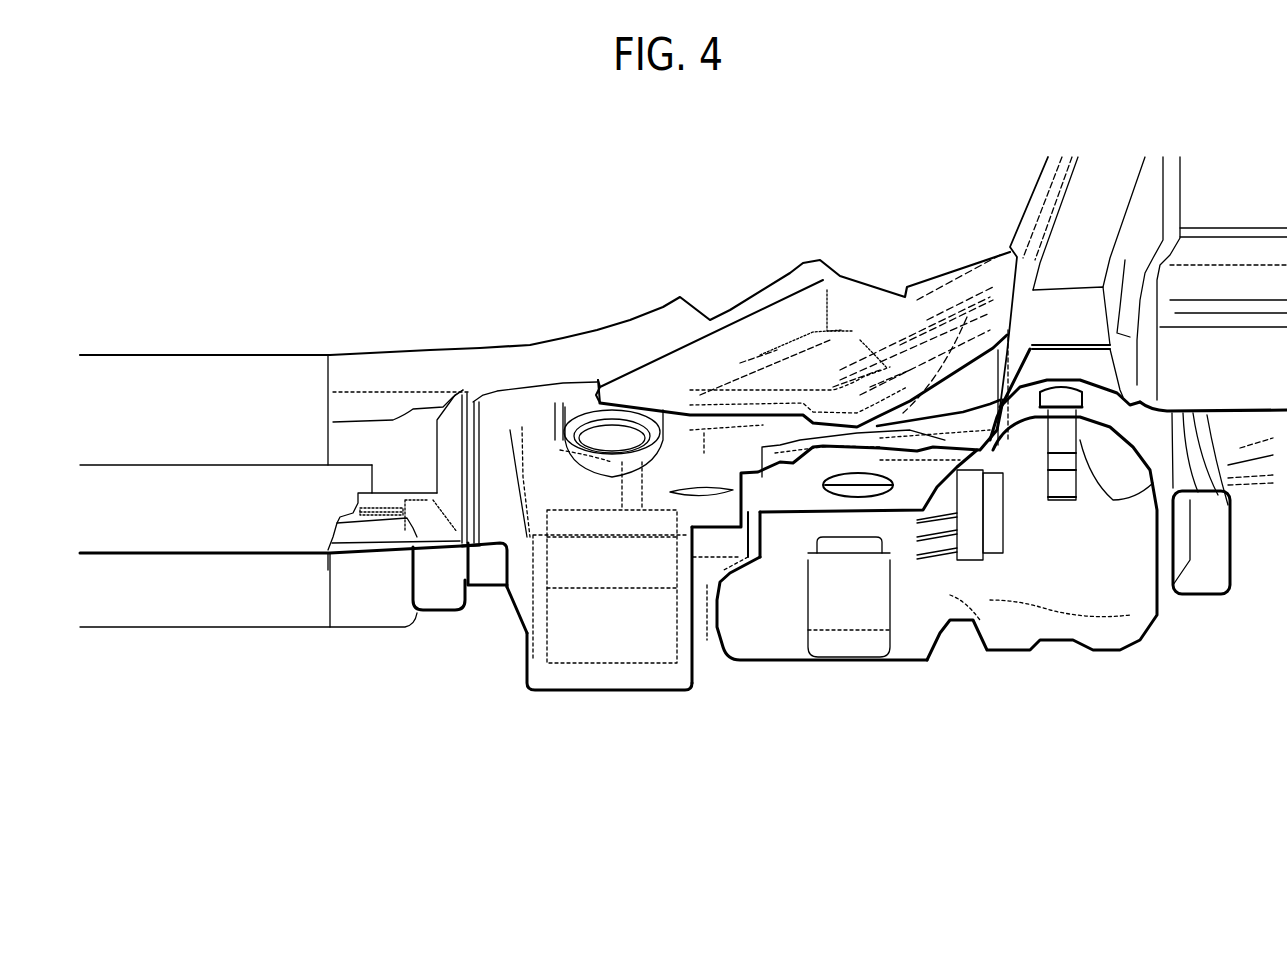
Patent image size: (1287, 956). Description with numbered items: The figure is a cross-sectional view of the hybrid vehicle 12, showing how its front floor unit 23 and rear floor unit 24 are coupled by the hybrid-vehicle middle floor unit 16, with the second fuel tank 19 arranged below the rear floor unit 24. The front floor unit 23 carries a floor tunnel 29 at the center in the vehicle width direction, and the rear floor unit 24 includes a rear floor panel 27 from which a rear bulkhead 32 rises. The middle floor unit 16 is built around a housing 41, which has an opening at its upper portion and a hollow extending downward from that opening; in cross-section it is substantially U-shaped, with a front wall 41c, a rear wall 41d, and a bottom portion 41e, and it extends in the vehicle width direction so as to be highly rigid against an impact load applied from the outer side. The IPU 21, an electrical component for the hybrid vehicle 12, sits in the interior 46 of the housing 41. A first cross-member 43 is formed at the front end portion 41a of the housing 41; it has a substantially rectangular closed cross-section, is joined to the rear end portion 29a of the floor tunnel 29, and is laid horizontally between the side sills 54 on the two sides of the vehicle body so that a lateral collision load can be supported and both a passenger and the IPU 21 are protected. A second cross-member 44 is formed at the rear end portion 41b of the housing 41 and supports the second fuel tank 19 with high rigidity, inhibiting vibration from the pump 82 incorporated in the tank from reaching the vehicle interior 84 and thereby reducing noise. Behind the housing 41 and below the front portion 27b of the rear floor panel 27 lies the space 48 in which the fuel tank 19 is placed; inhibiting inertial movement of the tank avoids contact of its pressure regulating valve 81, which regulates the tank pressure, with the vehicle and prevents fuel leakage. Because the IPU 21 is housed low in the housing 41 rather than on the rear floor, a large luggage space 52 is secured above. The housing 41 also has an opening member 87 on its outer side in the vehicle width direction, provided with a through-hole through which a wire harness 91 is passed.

The hybrid vehicle 12 is at (250, 283).
The front floor unit 23 is at (198, 353).
The side sills 54 is at (350, 372).
The floor tunnel 29 is at (163, 550).
The rear end portion of the floor tunnel 29a is at (343, 527).
The first cross-member 43 is at (487, 473).
The hybrid-vehicle middle floor unit 16 is at (567, 392).
The wire harness 91 is at (616, 412).
The opening member 87 is at (582, 468).
The rear floor unit 24 is at (963, 387).
The second cross-member 44 is at (707, 455).
The front portion of the rear floor panel 27b is at (880, 334).
The rear bulkhead 32 is at (1053, 195).
The rear floor panel 27 is at (1037, 268).
The luggage space 52 is at (1247, 211).
The space 48 is at (974, 677).
The valve 81 is at (1073, 443).
The pump 82 is at (877, 593).
The interior of the housing 46 is at (632, 642).
The housing 41 is at (517, 660).
The front end portion of the housing 41a is at (521, 460).
The rear end portion of the housing 41b is at (752, 492).
The front wall 41c is at (517, 631).
The rear wall 41d is at (722, 620).
The bottom portion 41e is at (627, 692).
The IPU 21 is at (680, 647).
The fuel tank for a hybrid vehicle 19 is at (903, 667).
The vehicle interior 84 is at (634, 231).